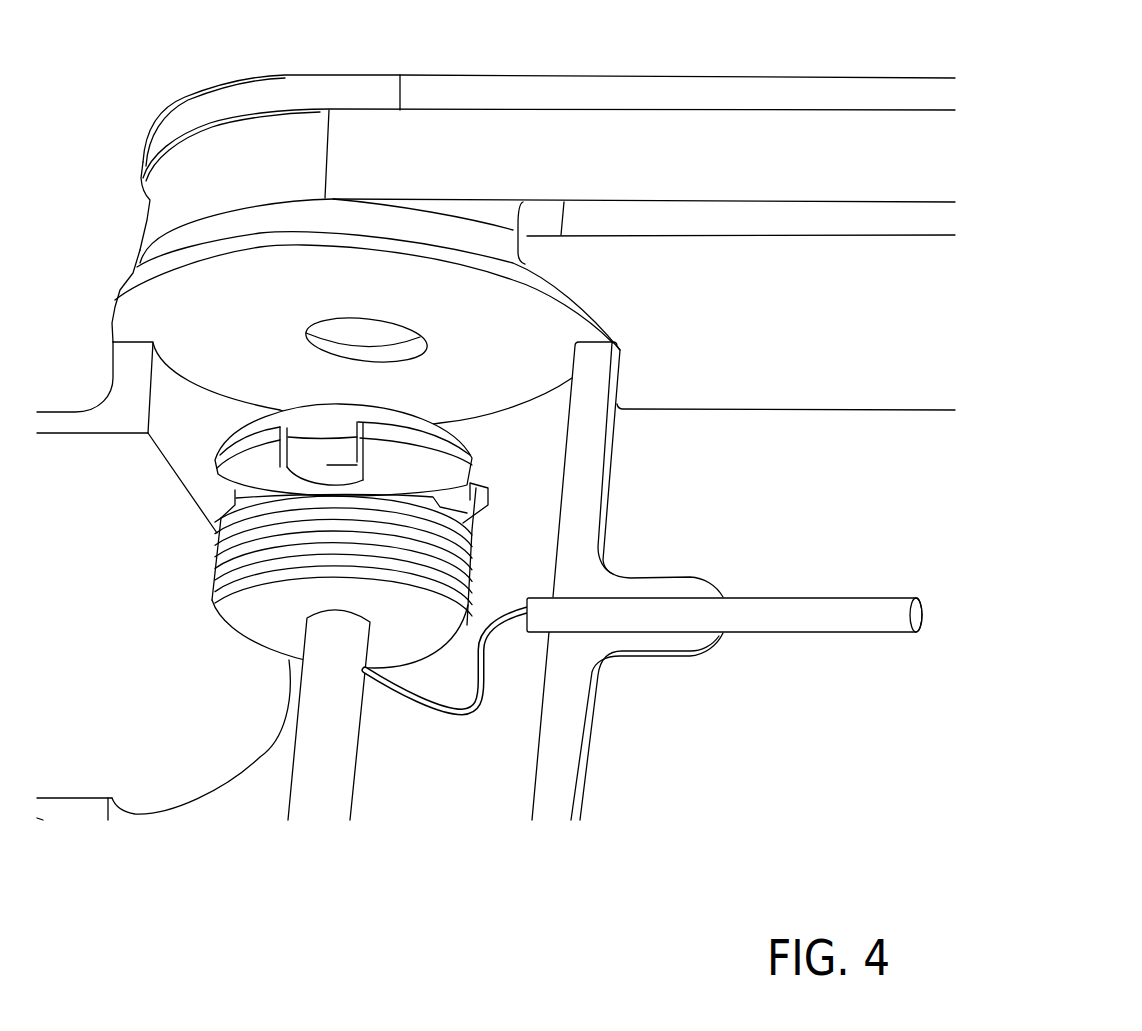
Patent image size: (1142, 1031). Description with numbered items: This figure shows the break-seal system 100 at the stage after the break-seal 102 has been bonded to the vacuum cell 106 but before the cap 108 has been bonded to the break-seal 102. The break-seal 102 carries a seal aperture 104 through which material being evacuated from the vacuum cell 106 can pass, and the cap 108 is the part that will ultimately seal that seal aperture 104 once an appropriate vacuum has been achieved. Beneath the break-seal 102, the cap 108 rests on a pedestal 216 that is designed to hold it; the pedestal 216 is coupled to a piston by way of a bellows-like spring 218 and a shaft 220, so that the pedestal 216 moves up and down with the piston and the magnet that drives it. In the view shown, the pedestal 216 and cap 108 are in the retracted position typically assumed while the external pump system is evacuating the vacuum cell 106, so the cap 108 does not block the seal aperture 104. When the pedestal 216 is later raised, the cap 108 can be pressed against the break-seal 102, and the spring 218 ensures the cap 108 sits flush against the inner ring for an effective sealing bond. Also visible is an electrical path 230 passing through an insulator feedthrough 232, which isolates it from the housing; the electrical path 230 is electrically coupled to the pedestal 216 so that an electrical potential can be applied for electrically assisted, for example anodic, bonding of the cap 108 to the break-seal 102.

The break-seal system 100 is at (598, 38).
The break-seal 102 is at (297, 303).
The seal aperture 104 is at (315, 350).
The vacuum cell 106 is at (500, 153).
The cap 108 is at (317, 422).
The pedestal 216 is at (233, 468).
The bellows-like spring 218 is at (213, 578).
The shaft 220 is at (360, 752).
The electrical path 230 is at (443, 718).
The insulator feedthrough 232 is at (636, 617).